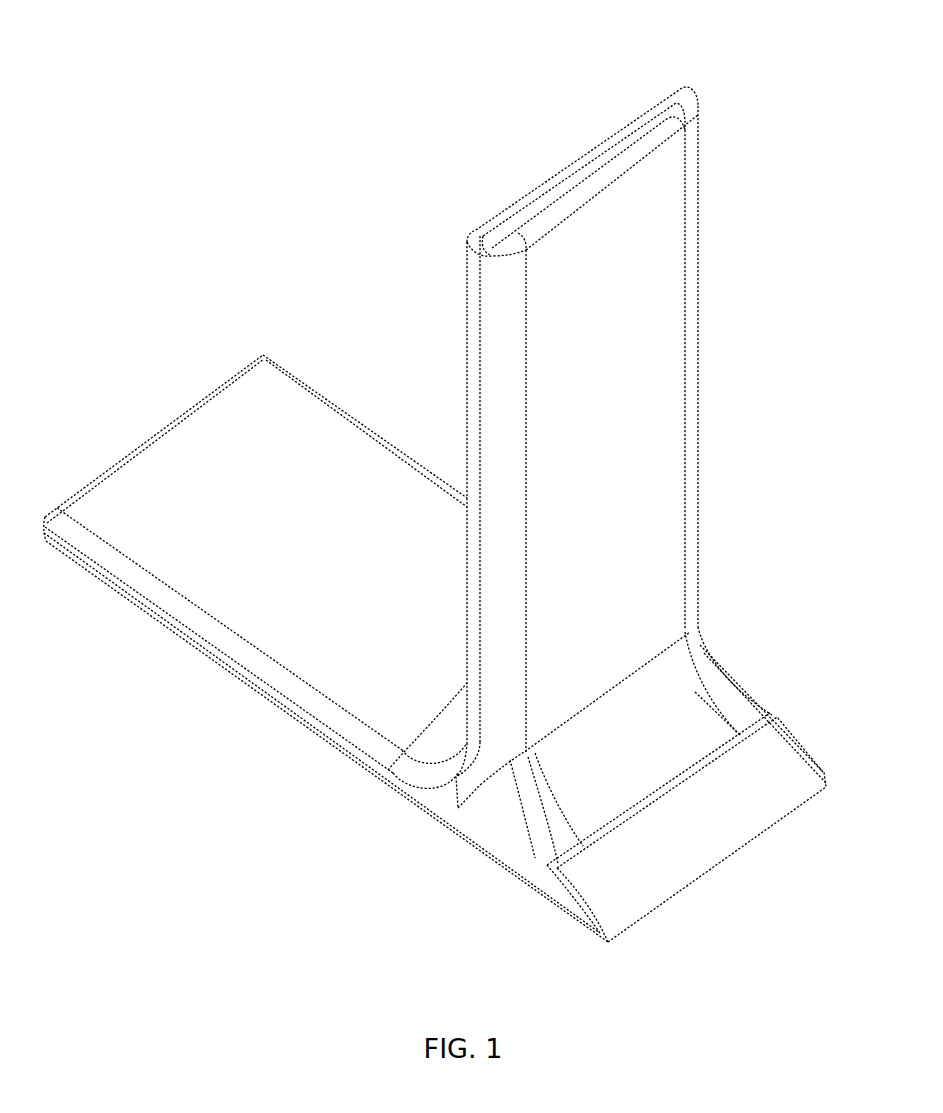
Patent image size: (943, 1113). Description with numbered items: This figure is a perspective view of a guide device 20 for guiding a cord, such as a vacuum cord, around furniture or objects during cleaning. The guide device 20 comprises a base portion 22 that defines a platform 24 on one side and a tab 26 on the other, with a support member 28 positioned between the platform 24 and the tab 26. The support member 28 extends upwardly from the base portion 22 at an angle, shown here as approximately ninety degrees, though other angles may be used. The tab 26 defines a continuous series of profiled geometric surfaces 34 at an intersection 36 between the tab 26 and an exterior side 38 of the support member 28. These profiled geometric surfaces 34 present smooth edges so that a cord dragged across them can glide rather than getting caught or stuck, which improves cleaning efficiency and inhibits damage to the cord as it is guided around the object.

The guide device 20 is at (250, 128).
The base portion 22 is at (312, 742).
The platform 24 is at (245, 570).
The tab 26 is at (695, 882).
The support member 28 is at (684, 88).
The continuous series of profiled geometric surfaces 34 is at (702, 673).
The intersection 36 is at (697, 711).
The exterior side 38 is at (646, 300).